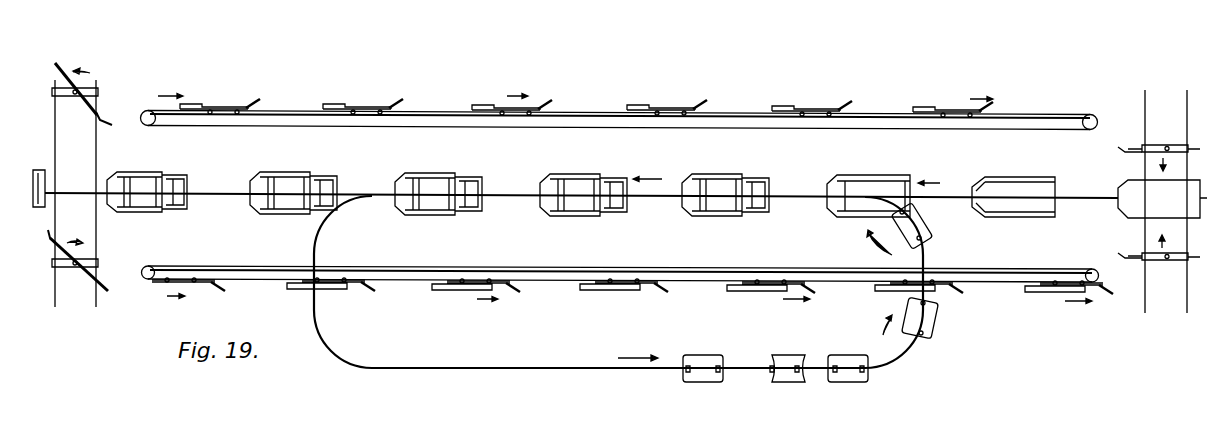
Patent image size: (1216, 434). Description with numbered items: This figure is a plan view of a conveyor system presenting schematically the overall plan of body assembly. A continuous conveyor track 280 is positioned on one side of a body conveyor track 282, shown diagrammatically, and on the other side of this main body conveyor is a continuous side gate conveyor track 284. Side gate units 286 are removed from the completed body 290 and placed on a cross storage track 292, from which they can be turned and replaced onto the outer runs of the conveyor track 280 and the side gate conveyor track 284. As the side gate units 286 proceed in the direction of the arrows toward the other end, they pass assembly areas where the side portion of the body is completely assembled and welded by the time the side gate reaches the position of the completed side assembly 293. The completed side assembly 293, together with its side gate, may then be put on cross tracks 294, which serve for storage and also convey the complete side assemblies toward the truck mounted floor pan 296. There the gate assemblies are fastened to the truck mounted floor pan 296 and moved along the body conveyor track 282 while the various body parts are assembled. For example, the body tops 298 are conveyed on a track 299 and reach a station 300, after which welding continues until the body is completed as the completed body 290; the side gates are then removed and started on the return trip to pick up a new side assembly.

The continuous conveyor track 280 is at (400, 266).
The body conveyor track 282 is at (200, 191).
The continuous side gate conveyor track 284 is at (438, 111).
The side gate units 286 is at (60, 63).
The completed body 290 is at (139, 207).
The cross storage track 292 is at (98, 233).
The completed side assembly 293 is at (960, 108).
The cross tracks 294 is at (1142, 235).
The truck mounted floor pan 296 is at (1050, 205).
The body tops 298 is at (725, 207).
The track 299 is at (547, 371).
The station 300 is at (711, 176).